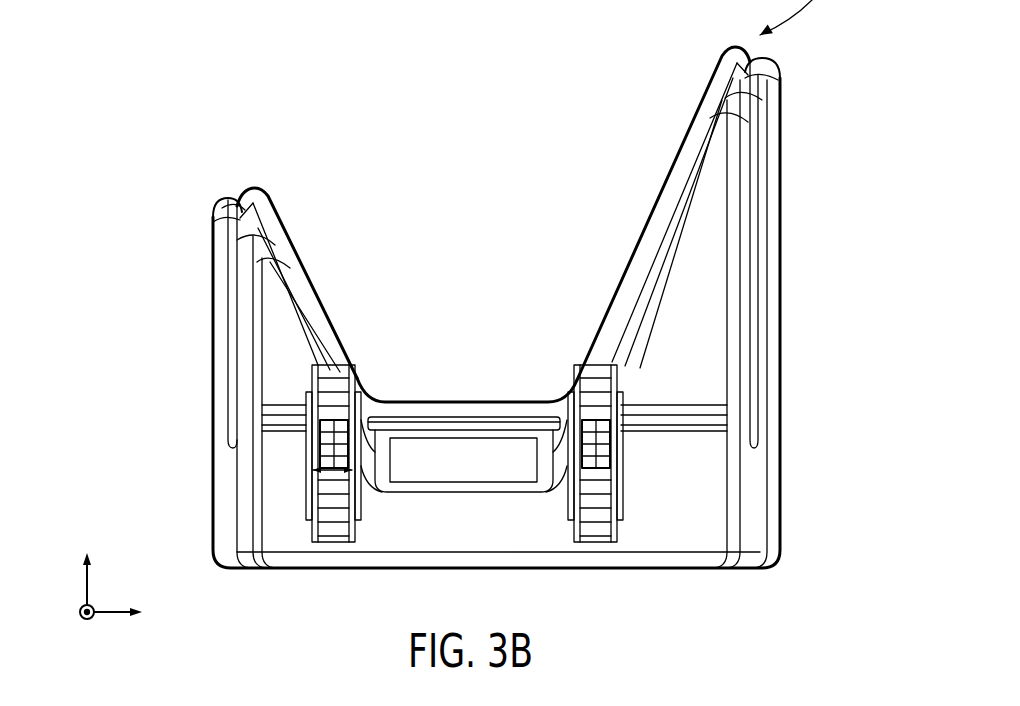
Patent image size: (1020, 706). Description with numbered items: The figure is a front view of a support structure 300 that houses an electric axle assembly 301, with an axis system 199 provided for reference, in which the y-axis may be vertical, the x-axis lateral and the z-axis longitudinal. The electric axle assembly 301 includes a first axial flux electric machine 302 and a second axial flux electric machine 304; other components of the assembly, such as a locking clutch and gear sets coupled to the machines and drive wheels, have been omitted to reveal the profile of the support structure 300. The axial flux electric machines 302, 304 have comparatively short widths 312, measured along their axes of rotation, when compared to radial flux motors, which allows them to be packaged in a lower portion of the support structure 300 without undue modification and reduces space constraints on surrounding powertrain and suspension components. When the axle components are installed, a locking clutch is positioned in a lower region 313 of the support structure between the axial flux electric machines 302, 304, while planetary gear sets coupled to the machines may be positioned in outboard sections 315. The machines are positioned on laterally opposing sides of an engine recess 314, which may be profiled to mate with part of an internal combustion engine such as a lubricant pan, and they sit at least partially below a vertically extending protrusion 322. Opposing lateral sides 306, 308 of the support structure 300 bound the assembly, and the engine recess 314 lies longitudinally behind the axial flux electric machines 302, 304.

The axis system 199 is at (117, 575).
The support structure 300 is at (167, 193).
The electric axle assembly 301 is at (152, 120).
The first axial flux electric machine 302 is at (329, 555).
The second axial flux electric machine 304 is at (598, 555).
The lateral side 306 is at (193, 285).
The lateral side 308 is at (827, 227).
The width 312 is at (332, 470).
The lower region 313 is at (470, 503).
The engine recess 314 is at (473, 428).
The outboard sections 315 is at (260, 420).
The vertically extending protrusion 322 is at (240, 170).